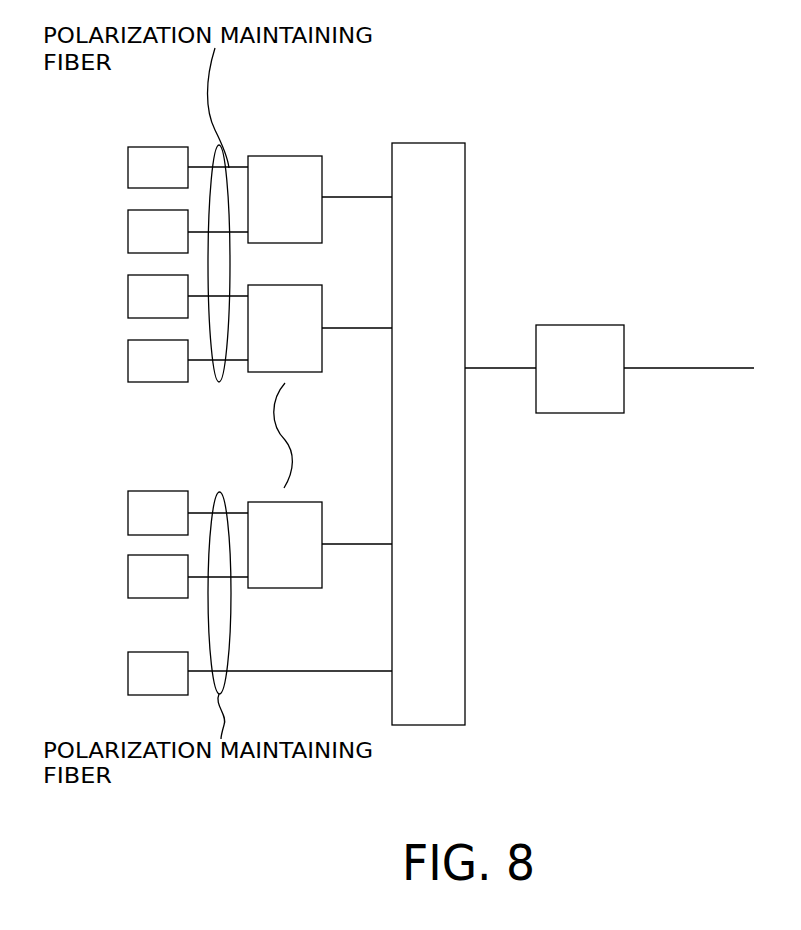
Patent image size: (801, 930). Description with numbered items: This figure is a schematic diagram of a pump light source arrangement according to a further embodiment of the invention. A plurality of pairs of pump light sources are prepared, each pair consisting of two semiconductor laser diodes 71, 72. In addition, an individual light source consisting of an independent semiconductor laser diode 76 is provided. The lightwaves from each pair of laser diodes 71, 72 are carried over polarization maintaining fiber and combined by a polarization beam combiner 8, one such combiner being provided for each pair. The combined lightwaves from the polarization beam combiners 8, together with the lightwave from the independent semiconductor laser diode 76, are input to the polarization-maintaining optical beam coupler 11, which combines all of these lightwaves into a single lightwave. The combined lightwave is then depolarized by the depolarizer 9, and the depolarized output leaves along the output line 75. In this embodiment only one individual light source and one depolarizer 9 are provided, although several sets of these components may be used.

The semiconductor laser diode 71 is at (145, 156).
The semiconductor laser diode 72 is at (145, 219).
The independent semiconductor laser diode 76 is at (145, 661).
The polarization beam combiner 8 is at (310, 296).
The polarization-maintaining optical beam coupler 11 is at (447, 166).
The depolarizer 9 is at (610, 335).
The output fiber 75 is at (715, 362).